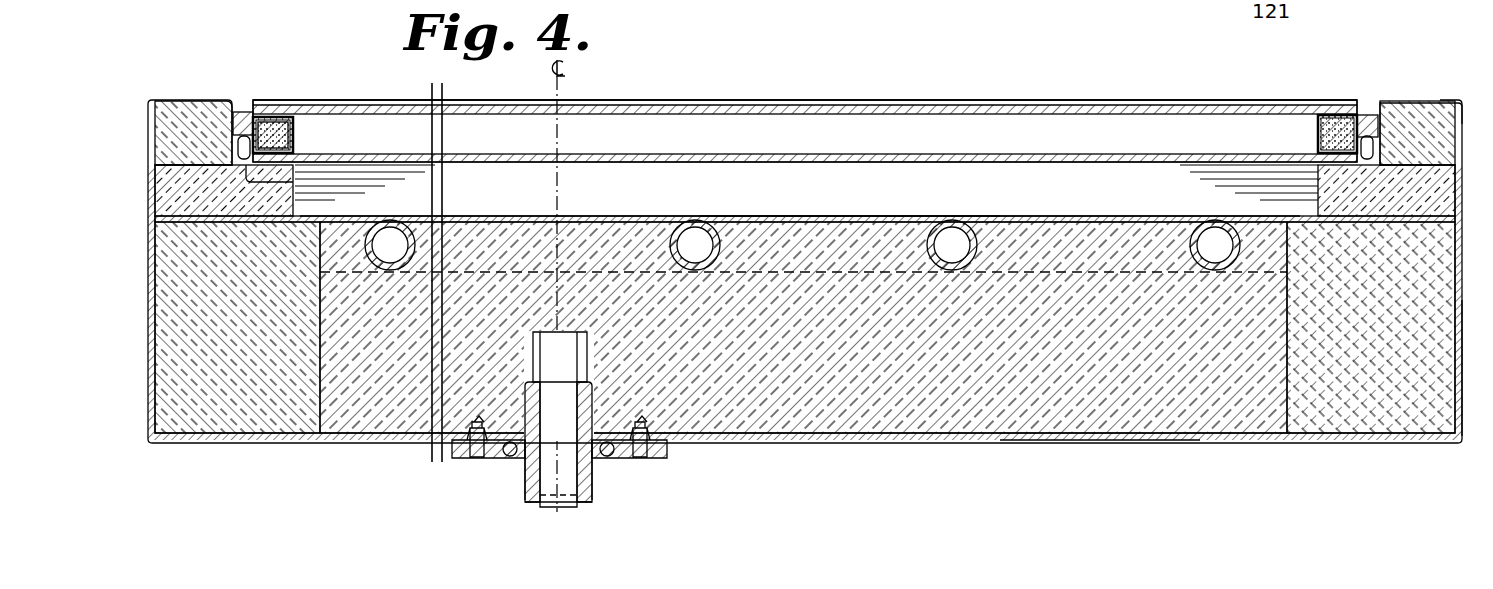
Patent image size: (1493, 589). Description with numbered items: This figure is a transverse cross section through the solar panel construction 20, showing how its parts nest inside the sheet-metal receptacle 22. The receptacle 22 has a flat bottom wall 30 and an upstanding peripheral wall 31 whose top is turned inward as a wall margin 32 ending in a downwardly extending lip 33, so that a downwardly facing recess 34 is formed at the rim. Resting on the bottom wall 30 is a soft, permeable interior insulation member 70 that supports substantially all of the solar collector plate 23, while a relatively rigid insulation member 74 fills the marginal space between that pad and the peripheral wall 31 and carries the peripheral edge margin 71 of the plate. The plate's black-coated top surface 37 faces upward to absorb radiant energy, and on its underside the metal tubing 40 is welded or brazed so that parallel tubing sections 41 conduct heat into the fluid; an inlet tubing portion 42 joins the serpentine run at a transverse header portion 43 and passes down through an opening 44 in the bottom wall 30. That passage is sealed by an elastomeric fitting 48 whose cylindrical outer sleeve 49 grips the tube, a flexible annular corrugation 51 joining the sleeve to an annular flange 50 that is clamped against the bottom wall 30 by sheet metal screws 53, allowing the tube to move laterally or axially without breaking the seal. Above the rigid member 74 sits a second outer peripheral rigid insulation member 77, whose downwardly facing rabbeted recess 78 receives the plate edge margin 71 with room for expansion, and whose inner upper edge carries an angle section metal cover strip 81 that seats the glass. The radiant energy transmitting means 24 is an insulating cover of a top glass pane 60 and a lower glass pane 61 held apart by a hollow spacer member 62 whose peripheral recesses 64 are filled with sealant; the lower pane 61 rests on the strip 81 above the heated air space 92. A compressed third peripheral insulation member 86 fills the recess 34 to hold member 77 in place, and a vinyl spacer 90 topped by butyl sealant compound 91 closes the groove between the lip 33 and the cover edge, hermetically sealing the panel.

The solar panel construction 20 is at (705, 92).
The receptacle 22 is at (140, 374).
The solar collector plate 23 is at (597, 213).
The radiant energy transmitting means 24 is at (825, 100).
The bottom wall 30 is at (1092, 442).
The peripheral wall 31 is at (1460, 388).
The wall margin 32 is at (1405, 100).
The lip 33 is at (1375, 122).
The recess 34 is at (1446, 110).
The top surface 37 is at (858, 217).
The tubing 40 is at (724, 235).
The tubing sections 41 is at (970, 242).
The inlet tubing portion 42 is at (585, 500).
The transverse header portion 43 is at (735, 275).
The opening 44 is at (503, 449).
The elastomeric fitting 48 is at (517, 480).
The outer sleeve 49 is at (593, 485).
The flange 50 is at (700, 452).
The corrugation 51 is at (600, 455).
The sheet metal screws 53 is at (480, 418).
The top glass pane 60 is at (1055, 113).
The lower glass pane 61 is at (1130, 155).
The spacer member 62 is at (295, 135).
The peripheral recesses 64 is at (268, 120).
The interior insulation member 70 is at (860, 385).
The peripheral edge margin 71 is at (305, 218).
The rigid insulation member 74 is at (215, 305).
The second outer peripheral rigid insulation member 77 is at (190, 186).
The rabbeted recess 78 is at (1355, 222).
The angle section metal cover strip 81 is at (1318, 178).
The third peripheral insulation member 86 is at (185, 122).
The vinyl spacer 90 is at (293, 183).
The sealant compound 91 is at (240, 112).
The space 92 is at (806, 182).